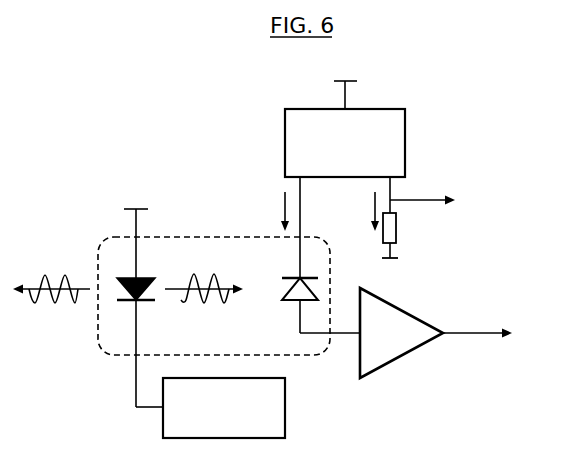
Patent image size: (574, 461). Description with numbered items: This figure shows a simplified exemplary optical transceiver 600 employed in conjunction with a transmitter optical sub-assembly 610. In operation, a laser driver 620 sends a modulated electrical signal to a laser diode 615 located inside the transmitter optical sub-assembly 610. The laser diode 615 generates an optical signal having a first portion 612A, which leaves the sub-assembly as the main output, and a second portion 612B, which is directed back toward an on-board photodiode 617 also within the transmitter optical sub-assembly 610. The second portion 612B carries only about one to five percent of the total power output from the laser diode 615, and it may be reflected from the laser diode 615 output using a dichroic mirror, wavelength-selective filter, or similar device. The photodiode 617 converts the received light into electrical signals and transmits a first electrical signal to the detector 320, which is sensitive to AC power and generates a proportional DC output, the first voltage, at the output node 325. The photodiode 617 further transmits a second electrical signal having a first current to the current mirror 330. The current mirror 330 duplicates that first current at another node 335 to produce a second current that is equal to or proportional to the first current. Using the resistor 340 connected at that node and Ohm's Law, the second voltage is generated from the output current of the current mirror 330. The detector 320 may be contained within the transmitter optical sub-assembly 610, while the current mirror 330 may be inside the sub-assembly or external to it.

The optical transceiver circuit 600 is at (447, 72).
The current mirror (CM) 330 is at (283, 125).
The node 335 is at (442, 196).
The resistor 340 is at (397, 240).
The transmitter optical sub-assembly (TOSA) 610 is at (173, 228).
The first portion 612A is at (52, 278).
The second portion 612B is at (216, 279).
The laser diode (LD) 615 is at (166, 273).
The on-board photodiode (PD) 617 is at (294, 305).
The laser driver 620 is at (163, 420).
The detector 320 is at (403, 360).
The output node 325 is at (482, 335).